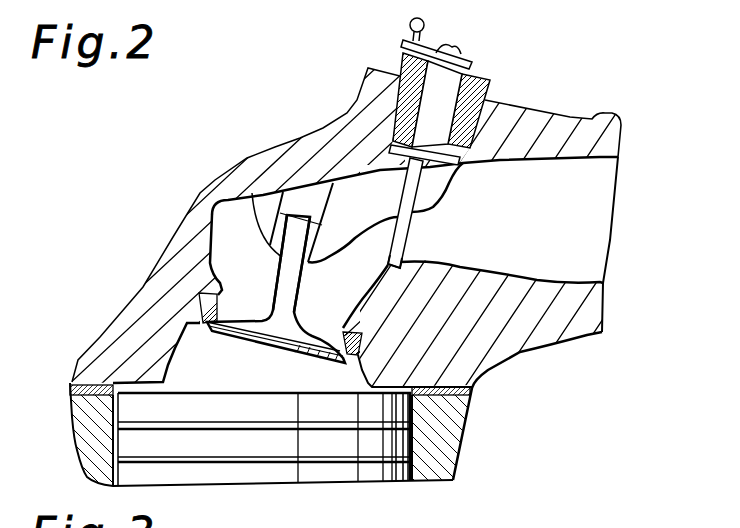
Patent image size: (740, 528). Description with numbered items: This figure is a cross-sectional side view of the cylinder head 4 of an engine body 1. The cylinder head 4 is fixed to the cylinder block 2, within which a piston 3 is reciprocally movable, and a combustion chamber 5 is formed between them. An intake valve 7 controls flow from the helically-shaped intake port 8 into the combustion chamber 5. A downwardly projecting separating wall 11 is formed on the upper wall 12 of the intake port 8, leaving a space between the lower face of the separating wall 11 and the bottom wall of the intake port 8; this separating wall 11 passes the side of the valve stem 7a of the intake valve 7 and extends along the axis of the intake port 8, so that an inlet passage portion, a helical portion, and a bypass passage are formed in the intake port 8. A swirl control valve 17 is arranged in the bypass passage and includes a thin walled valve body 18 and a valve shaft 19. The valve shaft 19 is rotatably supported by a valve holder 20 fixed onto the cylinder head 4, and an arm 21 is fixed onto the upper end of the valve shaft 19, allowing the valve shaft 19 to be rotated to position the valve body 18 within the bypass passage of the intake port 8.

The engine body 1 is at (482, 426).
The cylinder block 2 is at (436, 465).
The piston 3 is at (131, 471).
The cylinder head 4 is at (534, 134).
The combustion chamber 5 is at (196, 350).
The intake valve 7 is at (248, 321).
The valve stem 7a is at (278, 279).
The helically-shaped intake port 8 is at (568, 226).
The separating wall 11 is at (343, 222).
The upper wall 12 is at (356, 186).
The swirl control valve 17 is at (419, 227).
The valve body 18 is at (398, 249).
The valve shaft 19 is at (445, 86).
The valve holder 20 is at (472, 119).
The arm 21 is at (423, 44).